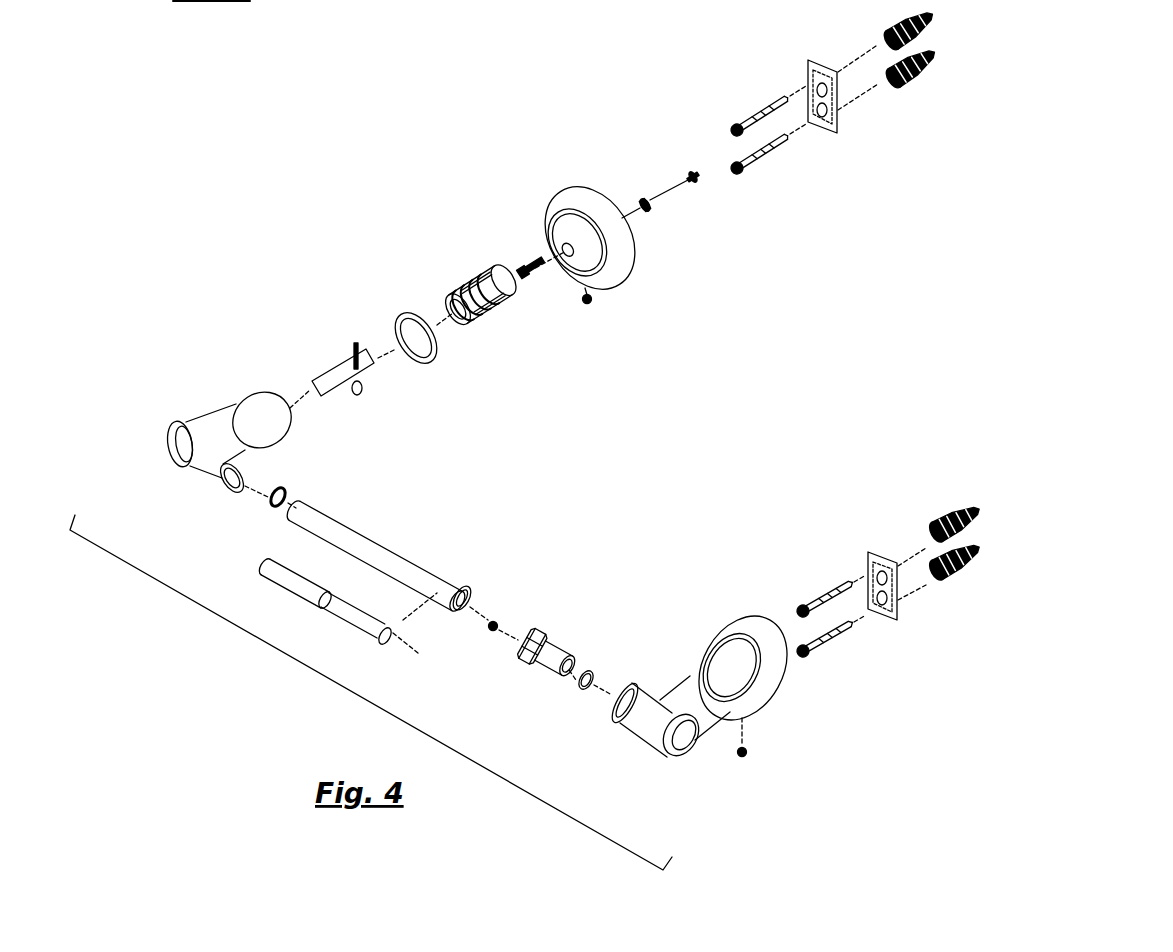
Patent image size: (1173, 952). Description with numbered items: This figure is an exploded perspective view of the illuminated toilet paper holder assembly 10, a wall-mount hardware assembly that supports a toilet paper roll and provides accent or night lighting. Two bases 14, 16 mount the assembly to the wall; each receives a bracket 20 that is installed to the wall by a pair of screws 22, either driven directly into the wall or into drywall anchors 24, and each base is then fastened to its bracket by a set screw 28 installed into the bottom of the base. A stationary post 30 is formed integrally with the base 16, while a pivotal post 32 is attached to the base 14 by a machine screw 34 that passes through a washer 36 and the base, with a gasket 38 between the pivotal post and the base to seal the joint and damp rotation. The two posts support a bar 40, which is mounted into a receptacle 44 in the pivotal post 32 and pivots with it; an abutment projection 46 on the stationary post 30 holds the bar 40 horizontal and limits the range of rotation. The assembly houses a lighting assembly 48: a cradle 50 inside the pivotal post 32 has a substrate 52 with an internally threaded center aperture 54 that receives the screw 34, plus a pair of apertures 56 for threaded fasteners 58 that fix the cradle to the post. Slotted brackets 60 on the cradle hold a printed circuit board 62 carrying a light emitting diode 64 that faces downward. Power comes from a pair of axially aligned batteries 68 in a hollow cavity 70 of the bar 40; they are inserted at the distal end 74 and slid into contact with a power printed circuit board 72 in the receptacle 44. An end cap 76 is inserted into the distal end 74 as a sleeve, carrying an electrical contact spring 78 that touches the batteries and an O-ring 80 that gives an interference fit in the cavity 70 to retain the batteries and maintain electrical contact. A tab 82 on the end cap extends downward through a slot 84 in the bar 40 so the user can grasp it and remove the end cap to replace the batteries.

The toilet paper holder assembly 10 is at (362, 702).
The base 14 is at (571, 184).
The base 16 is at (718, 614).
The bracket 20 is at (808, 61).
The screws 22 is at (752, 112).
The drywall anchors 24 is at (880, 32).
The set screw 28 is at (591, 304).
The stationary post 30 is at (708, 670).
The pivotal post 32 is at (178, 425).
The machine screw 34 is at (686, 174).
The washer 36 is at (640, 196).
The gasket 38 is at (396, 322).
The bar 40 is at (374, 538).
The receptacle 44 is at (232, 476).
The abutment projection 46 is at (608, 707).
The lighting assembly 48 is at (310, 378).
The cradle 50 is at (488, 278).
The substrate 52 is at (480, 270).
The center aperture 54 is at (490, 300).
The apertures 56 is at (512, 284).
The threaded fasteners 58 is at (533, 257).
The slotted brackets 60 is at (448, 300).
The printed circuit board 62 is at (338, 372).
The light emitting diode 64 is at (366, 388).
The batteries 68 is at (290, 592).
The hollow cavity 70 is at (467, 605).
The power printed circuit board 72 is at (258, 498).
The distal end 74 is at (464, 590).
The end cap 76 is at (534, 660).
The electrical contact spring 78 is at (490, 631).
The O-ring 80 is at (586, 668).
The tab 82 is at (551, 679).
The slot 84 is at (456, 608).